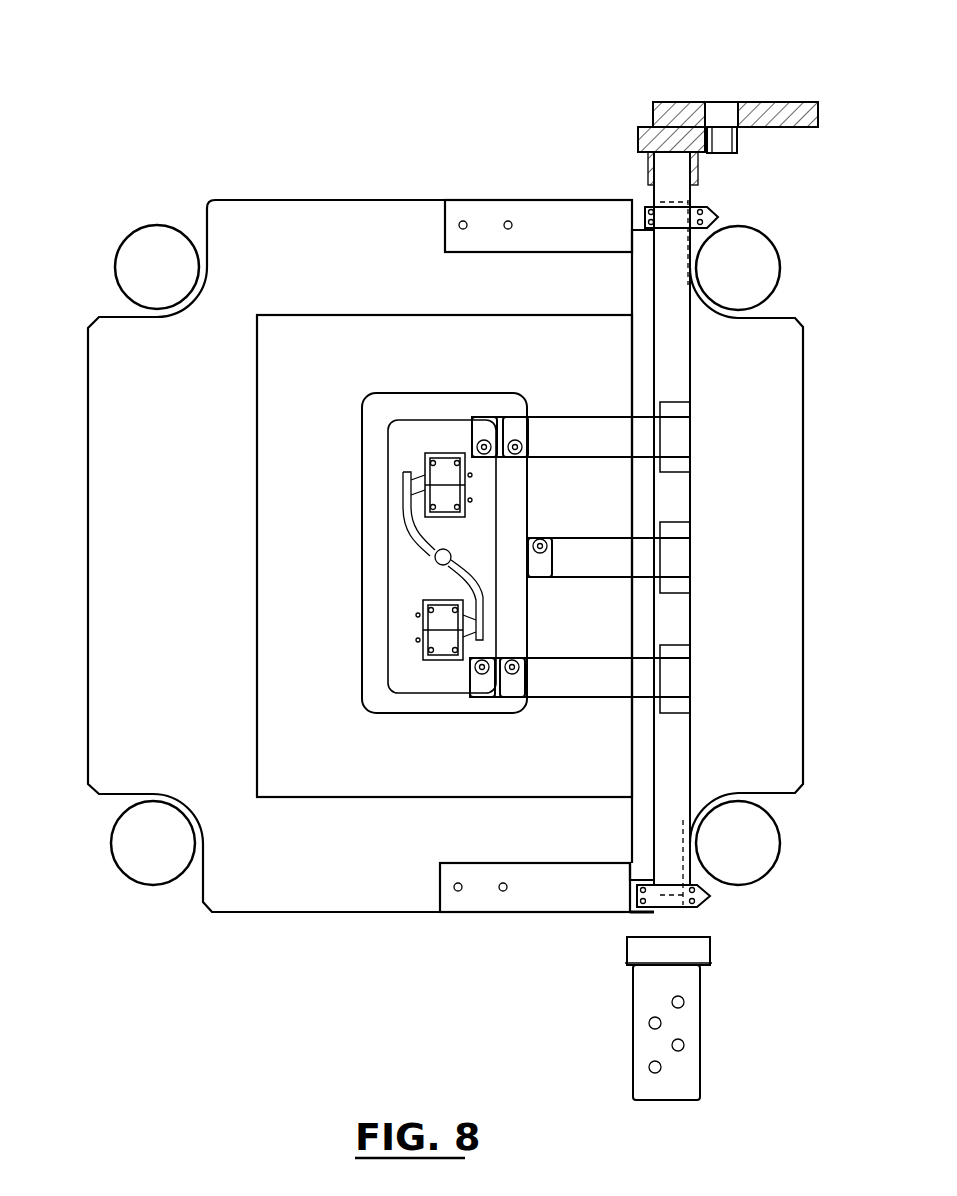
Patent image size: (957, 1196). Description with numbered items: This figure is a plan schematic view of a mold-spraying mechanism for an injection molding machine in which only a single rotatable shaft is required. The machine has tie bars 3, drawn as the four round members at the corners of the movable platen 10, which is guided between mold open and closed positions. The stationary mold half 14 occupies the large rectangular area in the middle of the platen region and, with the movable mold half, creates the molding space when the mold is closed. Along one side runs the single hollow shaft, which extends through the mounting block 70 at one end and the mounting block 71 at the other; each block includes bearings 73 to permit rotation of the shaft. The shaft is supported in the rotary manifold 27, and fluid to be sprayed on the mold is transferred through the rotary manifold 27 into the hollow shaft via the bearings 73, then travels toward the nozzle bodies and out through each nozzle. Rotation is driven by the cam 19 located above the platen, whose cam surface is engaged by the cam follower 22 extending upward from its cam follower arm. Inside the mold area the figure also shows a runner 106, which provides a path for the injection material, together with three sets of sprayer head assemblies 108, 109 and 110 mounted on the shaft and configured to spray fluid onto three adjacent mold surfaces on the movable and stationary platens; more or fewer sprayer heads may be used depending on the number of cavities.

The tie bars 3 is at (130, 261).
The movable platen 10 is at (772, 495).
The stationary mold half 14 is at (538, 366).
The cam 19 is at (797, 110).
The cam follower 22 is at (711, 104).
The rotary manifold 27 is at (688, 1027).
The mounting block 70 is at (692, 205).
The mounting block 71 is at (693, 908).
The bearings 73 is at (705, 220).
The runner 106 is at (428, 545).
The sprayer head assembly 108 is at (593, 437).
The sprayer head assembly 109 is at (587, 557).
The sprayer head assembly 110 is at (572, 677).